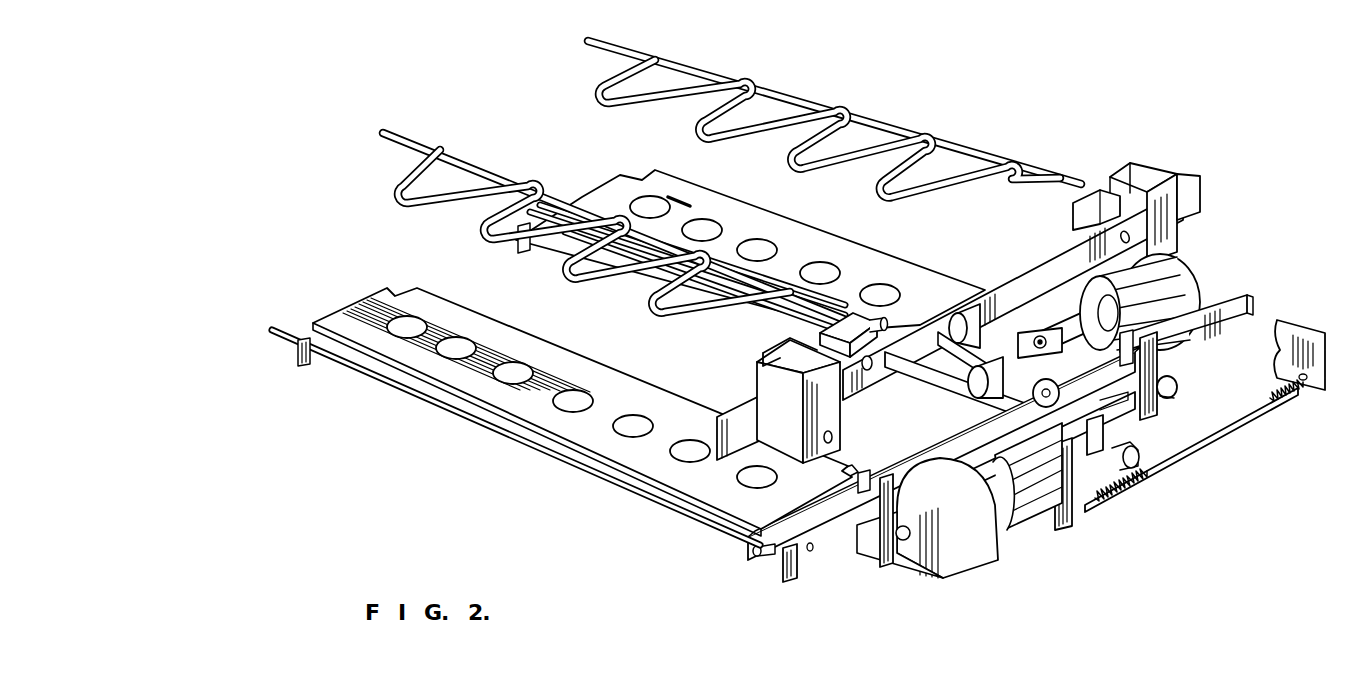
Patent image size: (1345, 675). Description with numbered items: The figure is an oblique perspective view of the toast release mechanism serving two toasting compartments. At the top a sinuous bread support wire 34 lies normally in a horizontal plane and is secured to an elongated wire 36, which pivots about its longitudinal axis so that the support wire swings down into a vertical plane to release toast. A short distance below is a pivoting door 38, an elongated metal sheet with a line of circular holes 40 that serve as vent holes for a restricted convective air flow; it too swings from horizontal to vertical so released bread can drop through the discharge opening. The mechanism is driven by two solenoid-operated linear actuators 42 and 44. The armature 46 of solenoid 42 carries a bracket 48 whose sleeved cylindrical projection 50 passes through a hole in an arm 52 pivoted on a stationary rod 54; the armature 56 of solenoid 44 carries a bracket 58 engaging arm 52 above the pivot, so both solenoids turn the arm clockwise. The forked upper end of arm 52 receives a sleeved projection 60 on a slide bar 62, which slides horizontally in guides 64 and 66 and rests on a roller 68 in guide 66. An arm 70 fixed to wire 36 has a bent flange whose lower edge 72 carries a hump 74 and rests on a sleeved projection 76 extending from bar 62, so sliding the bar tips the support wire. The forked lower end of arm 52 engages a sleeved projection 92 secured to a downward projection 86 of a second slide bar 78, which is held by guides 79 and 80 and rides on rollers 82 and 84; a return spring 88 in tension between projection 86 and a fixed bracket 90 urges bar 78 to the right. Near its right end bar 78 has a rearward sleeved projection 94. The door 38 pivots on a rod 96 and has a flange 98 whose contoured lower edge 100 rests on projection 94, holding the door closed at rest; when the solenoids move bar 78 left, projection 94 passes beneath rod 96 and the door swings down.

The sinuous bread support wire 34 is at (587, 281).
The elongated wire 36 is at (480, 168).
The pivoting door 38 is at (583, 360).
The circular holes 40 is at (629, 417).
The solenoid-operated linear actuator 42 is at (980, 510).
The solenoid-operated linear actuator 44 is at (1162, 281).
The armature 46 is at (1127, 422).
The bracket 48 is at (1083, 455).
The cylindrical projection 50 is at (1178, 378).
The arm 52 is at (995, 428).
The stationary rod 54 is at (1059, 388).
The armature 56 is at (1073, 330).
The bracket 58 is at (1047, 340).
The cylindrical projection 60 is at (957, 320).
The slide bar 62 is at (1022, 275).
The guide 64 is at (765, 378).
The guide 66 is at (1153, 170).
The roller 68 is at (1172, 246).
The arm 70 is at (853, 313).
The lower edge 72 is at (788, 345).
The hump 74 is at (880, 345).
The sleeved projection 76 is at (872, 351).
The slide bar 78 is at (1247, 308).
The guide 79 is at (888, 480).
The guide 80 is at (1158, 357).
The roller 82 is at (904, 541).
The roller 84 is at (1175, 395).
The projection 86 is at (1063, 472).
The return spring 88 is at (1188, 452).
The fixed bracket 90 is at (1283, 353).
The sleeved projection 92 is at (1137, 457).
The sleeved projection 94 is at (790, 567).
The rod 96 is at (700, 522).
The flange 98 is at (829, 502).
The lower edge 100 is at (796, 532).